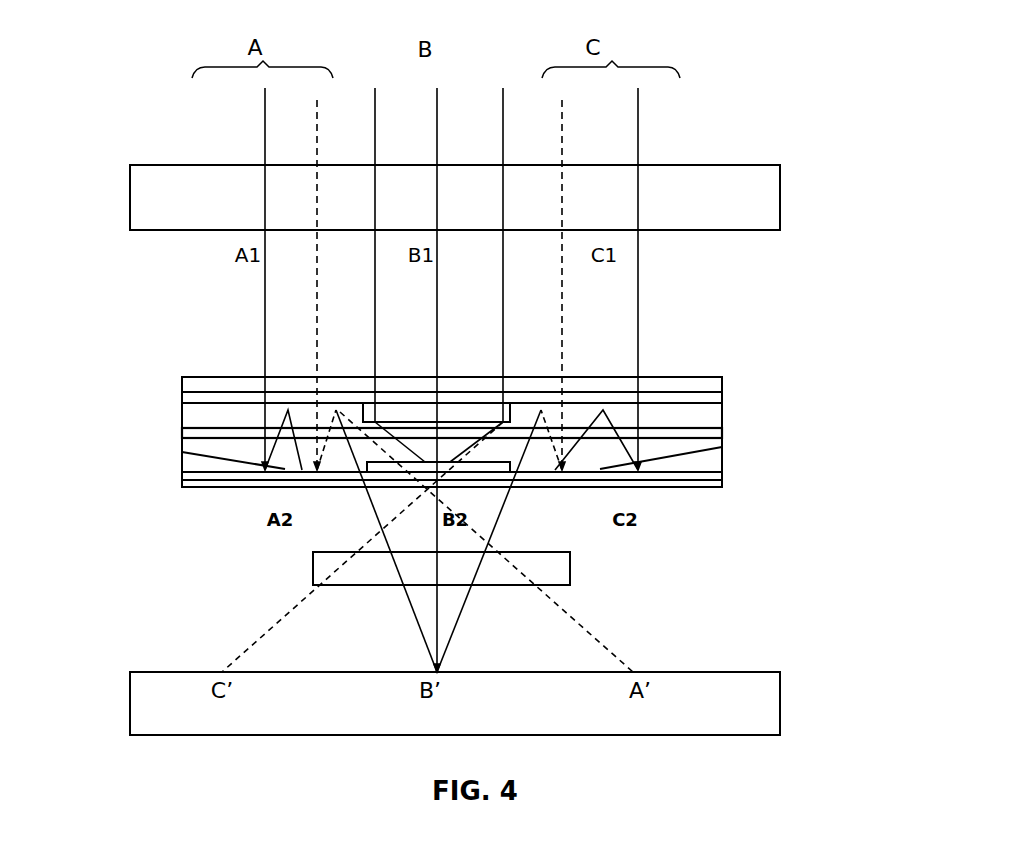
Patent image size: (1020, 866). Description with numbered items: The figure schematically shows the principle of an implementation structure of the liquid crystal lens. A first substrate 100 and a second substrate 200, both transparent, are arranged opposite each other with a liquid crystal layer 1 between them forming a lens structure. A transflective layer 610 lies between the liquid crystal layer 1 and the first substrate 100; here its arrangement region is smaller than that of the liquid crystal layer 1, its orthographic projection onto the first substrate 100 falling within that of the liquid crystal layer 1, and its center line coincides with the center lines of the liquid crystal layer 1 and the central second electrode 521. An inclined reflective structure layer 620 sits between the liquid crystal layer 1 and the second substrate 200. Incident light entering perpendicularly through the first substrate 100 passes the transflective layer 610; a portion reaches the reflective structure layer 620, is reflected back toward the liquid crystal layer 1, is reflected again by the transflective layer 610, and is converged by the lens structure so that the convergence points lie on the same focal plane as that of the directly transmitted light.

The first substrate 100 is at (498, 379).
The liquid crystal layer 1 is at (705, 433).
The transflective layer 610 is at (270, 362).
The reflective structure layer 620 is at (440, 491).
The second electrode 521 is at (513, 487).
The second substrate 200 is at (660, 482).